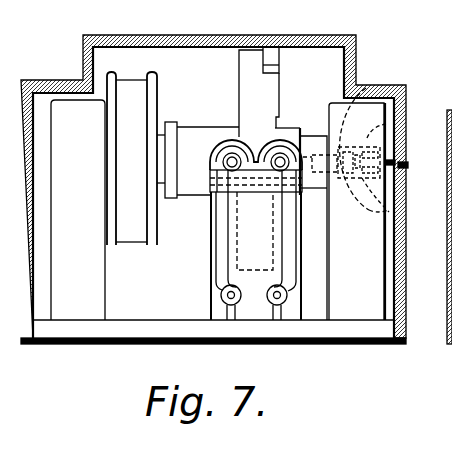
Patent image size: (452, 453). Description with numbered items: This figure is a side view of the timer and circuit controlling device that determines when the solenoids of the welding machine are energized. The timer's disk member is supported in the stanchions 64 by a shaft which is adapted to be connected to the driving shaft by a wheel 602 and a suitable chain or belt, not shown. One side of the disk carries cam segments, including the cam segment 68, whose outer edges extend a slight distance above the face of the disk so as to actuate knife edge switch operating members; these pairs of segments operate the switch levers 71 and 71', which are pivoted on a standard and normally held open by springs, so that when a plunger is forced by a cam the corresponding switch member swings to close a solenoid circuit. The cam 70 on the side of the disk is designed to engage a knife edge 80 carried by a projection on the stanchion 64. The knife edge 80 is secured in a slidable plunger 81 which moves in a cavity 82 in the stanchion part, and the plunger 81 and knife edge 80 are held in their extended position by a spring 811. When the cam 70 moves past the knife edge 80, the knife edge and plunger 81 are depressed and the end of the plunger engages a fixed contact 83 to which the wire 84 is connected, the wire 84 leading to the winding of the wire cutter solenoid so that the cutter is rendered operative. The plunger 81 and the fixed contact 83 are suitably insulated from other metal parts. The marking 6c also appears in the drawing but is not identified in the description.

The cam segment 68 is at (271, 50).
The wheel 602 is at (138, 223).
The stanchions 64 is at (93, 292).
The slidable plunger 81 is at (366, 90).
The fixed contact 83 is at (389, 128).
The wire 84 is at (404, 160).
The nut 6c is at (404, 165).
The knife edge 80 is at (315, 157).
The spring 811 is at (382, 188).
The cavity 82 is at (388, 210).
The cam 70 is at (307, 172).
The switch lever 71' is at (209, 248).
The switch lever 71 is at (296, 248).